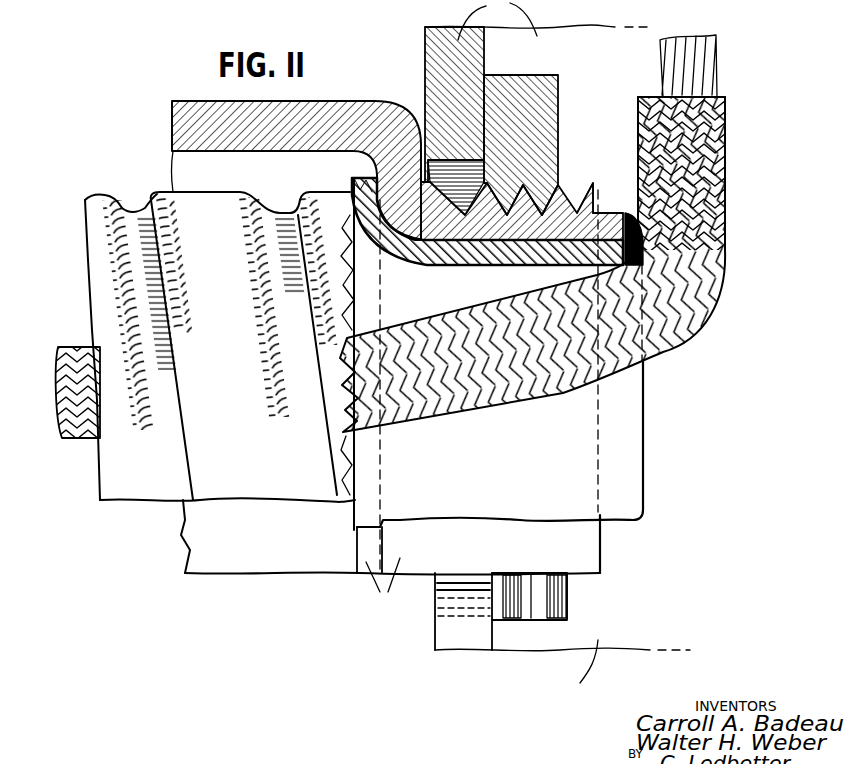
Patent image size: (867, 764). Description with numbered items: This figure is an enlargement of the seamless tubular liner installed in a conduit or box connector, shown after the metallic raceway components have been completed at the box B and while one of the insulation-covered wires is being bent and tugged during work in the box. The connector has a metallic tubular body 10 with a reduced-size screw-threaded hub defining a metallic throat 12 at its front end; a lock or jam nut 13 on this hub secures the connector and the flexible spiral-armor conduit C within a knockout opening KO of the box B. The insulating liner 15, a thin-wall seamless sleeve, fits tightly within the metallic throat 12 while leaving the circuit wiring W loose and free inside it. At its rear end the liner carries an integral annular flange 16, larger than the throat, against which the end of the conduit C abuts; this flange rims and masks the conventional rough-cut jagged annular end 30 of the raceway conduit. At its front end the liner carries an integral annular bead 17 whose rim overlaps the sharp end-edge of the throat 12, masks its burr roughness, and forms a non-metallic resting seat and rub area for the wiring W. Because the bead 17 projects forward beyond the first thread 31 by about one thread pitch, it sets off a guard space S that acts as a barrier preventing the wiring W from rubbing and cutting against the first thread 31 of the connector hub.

The tubular body 10 is at (205, 118).
The metallic throat 12 is at (536, 264).
The lock nut 13 is at (537, 95).
The tubular liner 15 is at (458, 268).
The rear end flange 16 is at (372, 180).
The front end bead 17 is at (630, 228).
The rough-cut jagged annular end 30 is at (349, 252).
The first thread 31 is at (593, 186).
The box B is at (482, 349).
The flexible-metallic conduit C is at (93, 215).
The knockout opening KO is at (452, 178).
The guard space S is at (608, 196).
The circuit wiring W is at (688, 131).